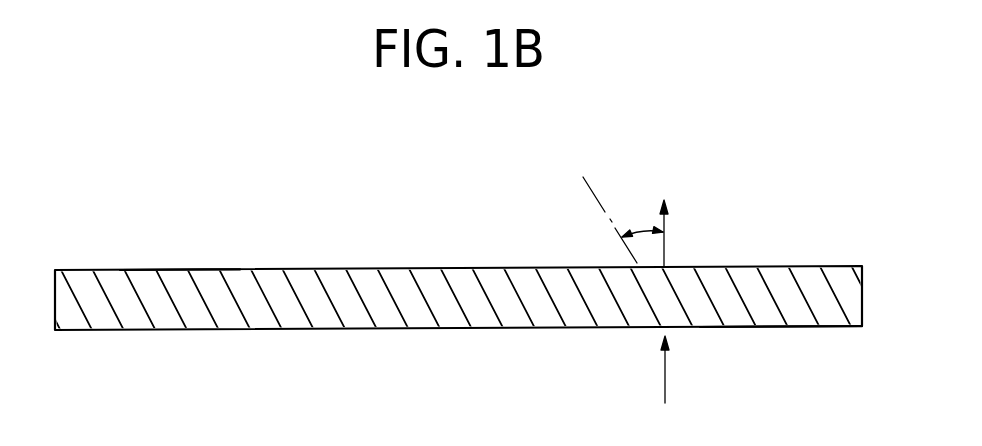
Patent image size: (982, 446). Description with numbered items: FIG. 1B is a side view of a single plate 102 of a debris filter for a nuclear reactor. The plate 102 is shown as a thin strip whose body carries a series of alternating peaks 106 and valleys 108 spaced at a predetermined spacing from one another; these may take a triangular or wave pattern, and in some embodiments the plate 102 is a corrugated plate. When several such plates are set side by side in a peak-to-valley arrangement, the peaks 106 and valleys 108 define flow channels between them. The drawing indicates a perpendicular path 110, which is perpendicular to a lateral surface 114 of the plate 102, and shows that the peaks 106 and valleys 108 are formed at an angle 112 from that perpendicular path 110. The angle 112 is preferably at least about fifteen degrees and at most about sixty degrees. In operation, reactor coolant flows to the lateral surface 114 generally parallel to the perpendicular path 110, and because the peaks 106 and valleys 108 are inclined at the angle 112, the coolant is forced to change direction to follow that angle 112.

The plate 102 is at (452, 232).
The peaks 106 is at (173, 340).
The valleys 108 is at (167, 269).
The perpendicular path 110 is at (665, 367).
The angle 112 is at (642, 230).
The lateral surface 114 is at (805, 349).